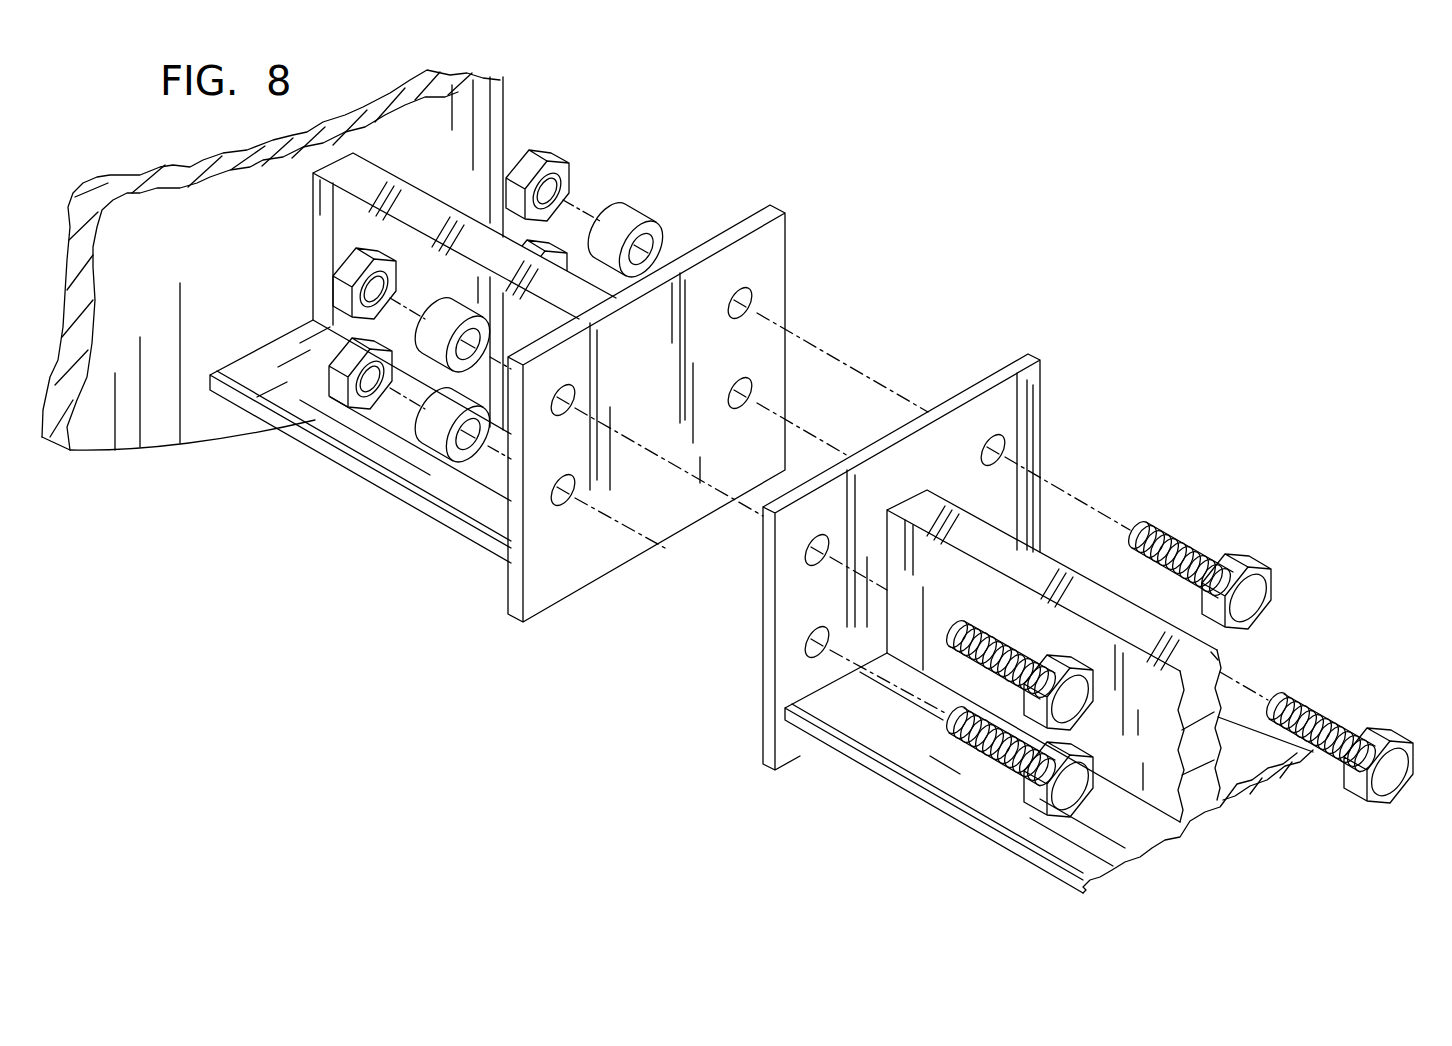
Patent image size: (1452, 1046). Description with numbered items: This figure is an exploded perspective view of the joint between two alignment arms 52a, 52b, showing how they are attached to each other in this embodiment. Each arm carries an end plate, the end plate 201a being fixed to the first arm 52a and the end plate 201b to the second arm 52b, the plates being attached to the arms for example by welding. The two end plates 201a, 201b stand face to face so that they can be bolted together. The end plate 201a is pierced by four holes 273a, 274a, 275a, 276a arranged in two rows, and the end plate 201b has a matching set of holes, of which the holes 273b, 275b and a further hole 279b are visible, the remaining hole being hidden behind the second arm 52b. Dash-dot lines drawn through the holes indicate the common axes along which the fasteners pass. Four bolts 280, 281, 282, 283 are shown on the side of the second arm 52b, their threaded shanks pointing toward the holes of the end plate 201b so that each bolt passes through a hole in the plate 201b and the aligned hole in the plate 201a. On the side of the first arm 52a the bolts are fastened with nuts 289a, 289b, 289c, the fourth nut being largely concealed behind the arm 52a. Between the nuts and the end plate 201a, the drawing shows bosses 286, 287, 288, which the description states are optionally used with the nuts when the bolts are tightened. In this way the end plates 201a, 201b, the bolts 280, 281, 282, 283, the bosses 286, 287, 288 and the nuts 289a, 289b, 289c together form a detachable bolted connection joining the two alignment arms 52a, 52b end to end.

The alignment arm 52a is at (358, 183).
The alignment arm 52b is at (1196, 640).
The end plate 201a is at (718, 413).
The end plate 201b is at (921, 562).
The hole 273a is at (750, 302).
The hole 273b is at (1005, 449).
The hole 274a is at (578, 393).
The hole 275a is at (580, 496).
The hole 275b is at (800, 641).
The hole 276a is at (752, 392).
The bolt hole in second splice plate 279b is at (800, 551).
The bolt 280 is at (1017, 655).
The bolt 281 is at (968, 763).
The bolt 282 is at (1168, 535).
The bolt 283 is at (1345, 723).
The boss 286 is at (455, 270).
The boss 287 is at (422, 437).
The boss 288 is at (643, 206).
The nut 289a is at (335, 290).
The nut 289b is at (575, 165).
The nut 289c is at (335, 398).